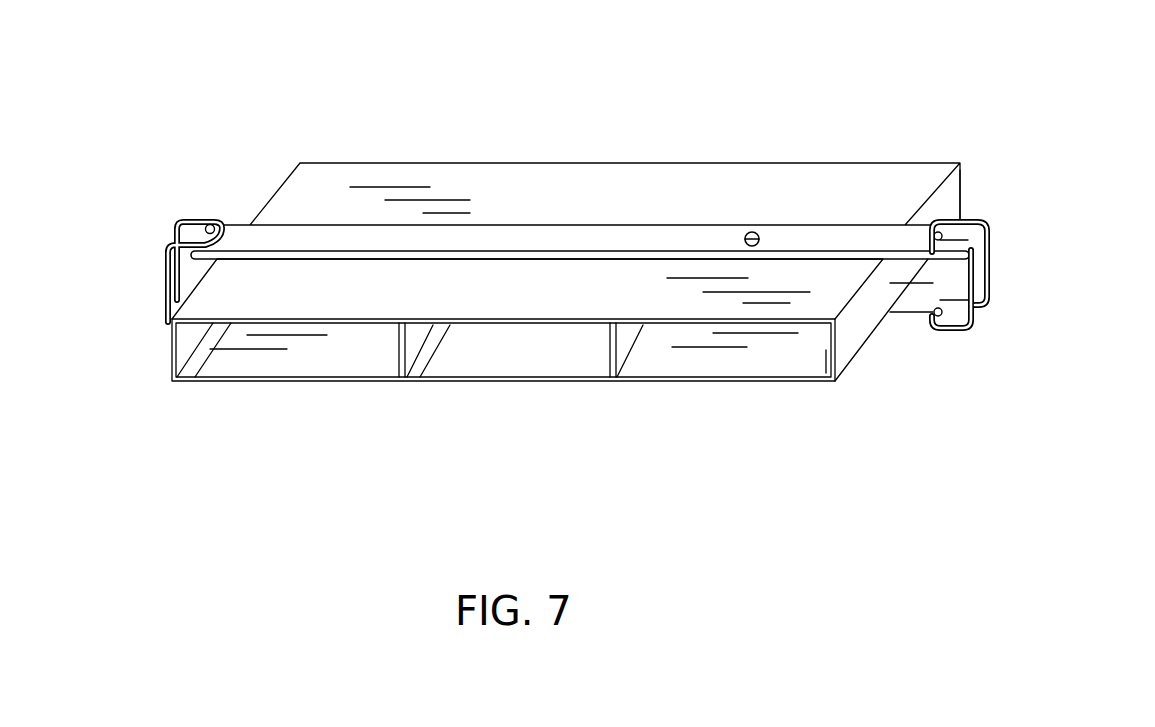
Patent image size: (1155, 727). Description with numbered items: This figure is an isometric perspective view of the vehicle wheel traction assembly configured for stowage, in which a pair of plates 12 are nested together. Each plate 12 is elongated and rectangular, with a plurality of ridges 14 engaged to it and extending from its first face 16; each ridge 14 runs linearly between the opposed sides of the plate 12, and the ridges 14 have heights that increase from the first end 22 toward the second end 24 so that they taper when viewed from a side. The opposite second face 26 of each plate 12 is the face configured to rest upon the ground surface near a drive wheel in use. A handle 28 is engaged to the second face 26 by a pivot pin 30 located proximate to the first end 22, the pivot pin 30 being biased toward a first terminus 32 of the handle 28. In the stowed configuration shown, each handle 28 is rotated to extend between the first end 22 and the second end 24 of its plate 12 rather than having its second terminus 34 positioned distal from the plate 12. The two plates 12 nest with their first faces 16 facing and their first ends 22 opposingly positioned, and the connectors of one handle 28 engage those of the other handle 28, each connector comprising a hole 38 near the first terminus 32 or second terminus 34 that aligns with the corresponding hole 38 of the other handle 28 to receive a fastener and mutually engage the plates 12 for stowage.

The plate 12 is at (480, 320).
The ridges 14 is at (847, 333).
The first face 16 is at (370, 368).
The first end 22 is at (962, 218).
The second end 24 is at (280, 190).
The second face 26 is at (552, 213).
The handle 28 is at (578, 240).
The pivot pin 30 is at (753, 232).
The first terminus 32 is at (980, 222).
The second terminus 34 is at (178, 232).
The hole 38 is at (963, 238).